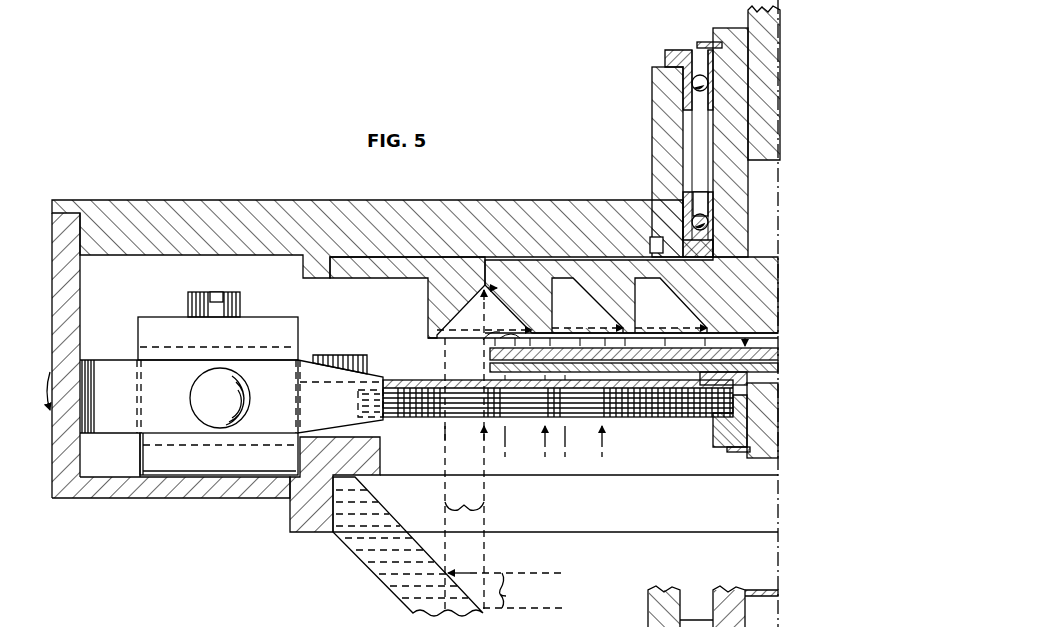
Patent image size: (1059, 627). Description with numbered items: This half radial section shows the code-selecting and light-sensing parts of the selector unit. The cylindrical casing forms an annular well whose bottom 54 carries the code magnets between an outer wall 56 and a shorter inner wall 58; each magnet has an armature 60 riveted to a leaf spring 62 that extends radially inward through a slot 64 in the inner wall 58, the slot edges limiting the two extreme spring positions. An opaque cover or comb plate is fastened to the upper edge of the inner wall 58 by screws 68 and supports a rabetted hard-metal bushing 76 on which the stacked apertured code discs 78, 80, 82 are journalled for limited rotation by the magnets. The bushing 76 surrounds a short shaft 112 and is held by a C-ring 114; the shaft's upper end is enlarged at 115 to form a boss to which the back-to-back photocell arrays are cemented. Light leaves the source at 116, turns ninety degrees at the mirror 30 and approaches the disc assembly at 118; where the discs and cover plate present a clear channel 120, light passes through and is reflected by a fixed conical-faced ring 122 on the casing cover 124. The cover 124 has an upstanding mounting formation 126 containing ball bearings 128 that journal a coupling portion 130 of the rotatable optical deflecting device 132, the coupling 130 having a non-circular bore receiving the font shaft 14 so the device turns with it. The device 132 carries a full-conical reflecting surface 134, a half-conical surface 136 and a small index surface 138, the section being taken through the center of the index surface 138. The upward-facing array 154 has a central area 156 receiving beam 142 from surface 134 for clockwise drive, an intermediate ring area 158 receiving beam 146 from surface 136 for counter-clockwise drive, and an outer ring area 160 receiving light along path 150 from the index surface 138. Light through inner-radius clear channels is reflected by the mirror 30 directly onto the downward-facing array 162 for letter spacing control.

The font shaft 14 is at (772, 15).
The mirror 30 is at (372, 570).
The bottom of annular well 54 is at (104, 480).
The outer wall 56 is at (60, 300).
The inner wall 58 is at (372, 454).
The armature 60 is at (162, 326).
The leaf spring 62 is at (114, 368).
The slot 64 is at (372, 430).
The screw 68 is at (336, 358).
The journal bushing 76 is at (714, 432).
The code disc 78 is at (472, 418).
The code disc 80 is at (530, 420).
The code disc 82 is at (590, 420).
The short shaft 112 is at (772, 406).
The C-ring 114 is at (730, 450).
The enlarged end (boss) 115 is at (745, 376).
The light path from source 116 is at (506, 590).
The light path to code disc assembly 118 is at (464, 495).
The clear channel 120 is at (467, 386).
The conical-faced ring 122 is at (448, 328).
The casing cover 124 is at (336, 203).
The cylindrical mounting formation 126 is at (652, 126).
The ball bearing 128 is at (672, 52).
The coupling portion 130 is at (735, 30).
The optical deflecting device 132 is at (782, 268).
The conical reflecting surface 134 is at (706, 306).
The semicircular conical reflecting surface 136 is at (588, 290).
The index reflecting surface 138 is at (502, 275).
The light beam 142 is at (658, 288).
The light beam 146 is at (574, 288).
The light path 150 is at (484, 309).
The upward-facing photocell array 154 is at (778, 352).
The central area 156 is at (778, 336).
The intermediate ring area 158 is at (596, 346).
The outer ring area 160 is at (498, 346).
The downward-facing photocell array 162 is at (776, 368).